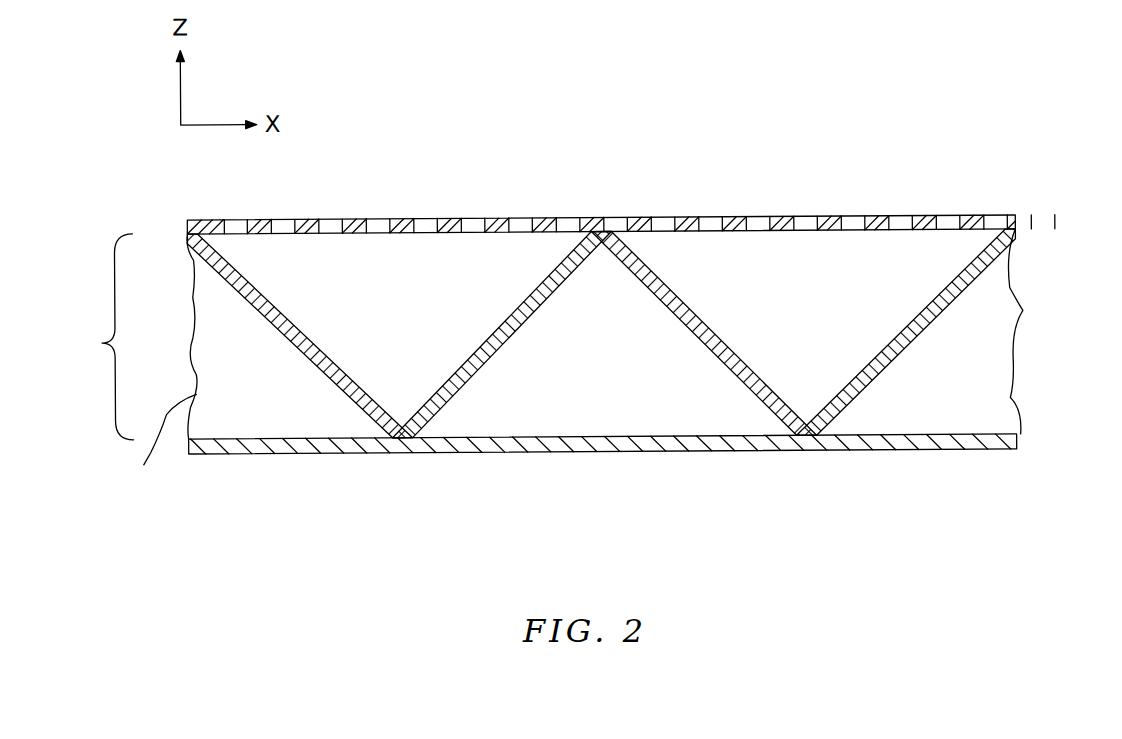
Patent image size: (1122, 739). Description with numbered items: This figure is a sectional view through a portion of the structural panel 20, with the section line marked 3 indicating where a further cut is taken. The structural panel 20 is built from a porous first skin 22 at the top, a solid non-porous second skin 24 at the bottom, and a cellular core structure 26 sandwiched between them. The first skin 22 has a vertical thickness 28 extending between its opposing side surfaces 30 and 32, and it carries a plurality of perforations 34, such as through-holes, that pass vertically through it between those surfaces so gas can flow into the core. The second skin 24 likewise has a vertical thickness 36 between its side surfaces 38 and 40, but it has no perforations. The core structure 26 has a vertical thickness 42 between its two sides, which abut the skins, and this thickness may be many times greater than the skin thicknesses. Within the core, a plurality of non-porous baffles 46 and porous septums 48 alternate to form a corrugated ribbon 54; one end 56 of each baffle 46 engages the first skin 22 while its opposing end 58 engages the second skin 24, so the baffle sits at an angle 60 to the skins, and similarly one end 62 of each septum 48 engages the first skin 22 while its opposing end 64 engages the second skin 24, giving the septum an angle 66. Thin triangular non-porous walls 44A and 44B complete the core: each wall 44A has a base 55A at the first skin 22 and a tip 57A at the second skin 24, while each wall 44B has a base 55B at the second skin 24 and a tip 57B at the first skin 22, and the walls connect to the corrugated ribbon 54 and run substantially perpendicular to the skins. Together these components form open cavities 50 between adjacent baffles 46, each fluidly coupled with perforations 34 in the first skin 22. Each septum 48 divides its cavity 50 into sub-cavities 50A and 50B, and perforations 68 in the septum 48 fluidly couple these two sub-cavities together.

The structural panel 20 is at (882, 72).
The first skin 22 is at (180, 232).
The second skin 24 is at (178, 458).
The core structure 26 is at (129, 336).
The vertical thickness 28 is at (1112, 232).
The side surface 30 is at (204, 218).
The side surface 32 is at (192, 246).
The perforations 34 is at (375, 218).
The vertical thickness 36 is at (1052, 385).
The side surface 38 is at (204, 436).
The side surface 40 is at (233, 452).
The vertical thickness 42 is at (1112, 436).
The non-porous wall 44A is at (397, 218).
The non-porous wall 44B is at (1050, 362).
The baffle 46 is at (340, 378).
The septum 48 is at (497, 364).
The cavity 50 is at (705, 243).
The sub-cavity 50A is at (452, 290).
The sub-cavity 50B is at (682, 397).
The corrugated ribbon 54 is at (328, 392).
The base 55A is at (447, 218).
The base 55B is at (557, 452).
The end 56 is at (603, 232).
The tip 57A is at (432, 437).
The tip 57B is at (640, 218).
The end 58 is at (405, 437).
The angle 60 is at (667, 277).
The end 62 is at (1002, 218).
The end 64 is at (814, 446).
The angle 66 is at (541, 278).
The perforations 68 is at (533, 315).
The section line 3- 3 is at (805, 205).